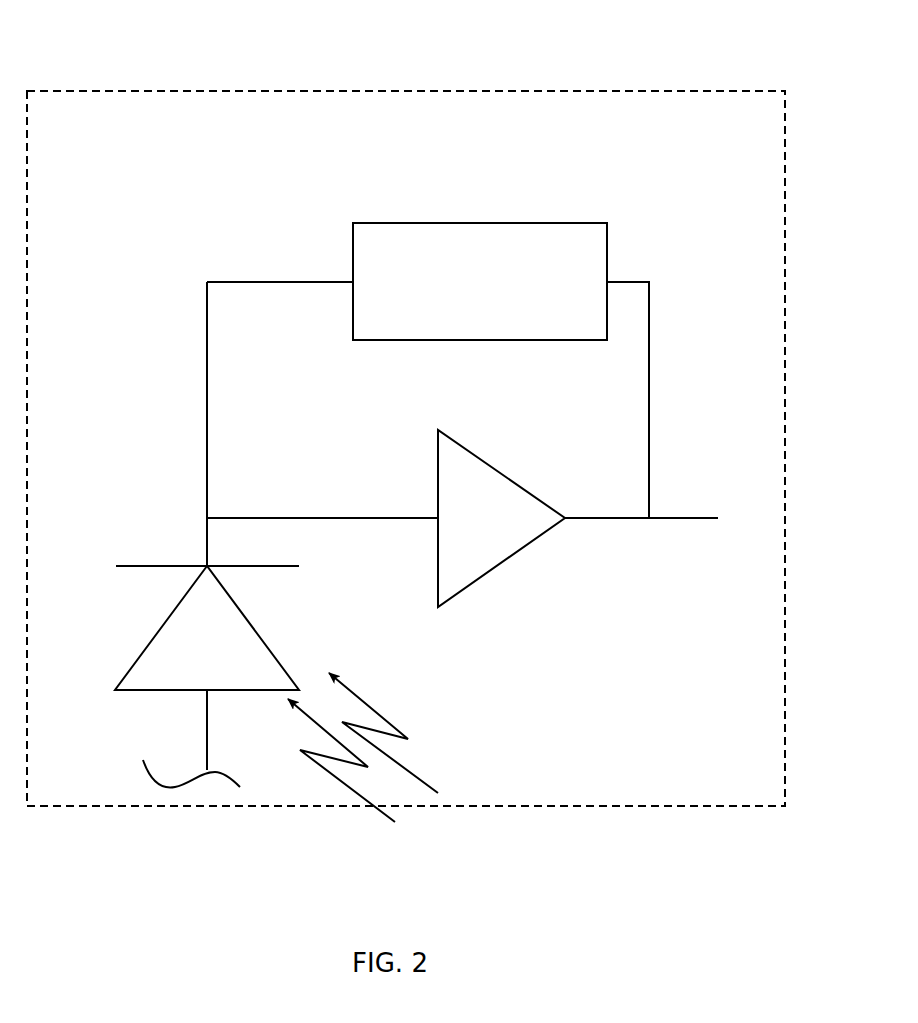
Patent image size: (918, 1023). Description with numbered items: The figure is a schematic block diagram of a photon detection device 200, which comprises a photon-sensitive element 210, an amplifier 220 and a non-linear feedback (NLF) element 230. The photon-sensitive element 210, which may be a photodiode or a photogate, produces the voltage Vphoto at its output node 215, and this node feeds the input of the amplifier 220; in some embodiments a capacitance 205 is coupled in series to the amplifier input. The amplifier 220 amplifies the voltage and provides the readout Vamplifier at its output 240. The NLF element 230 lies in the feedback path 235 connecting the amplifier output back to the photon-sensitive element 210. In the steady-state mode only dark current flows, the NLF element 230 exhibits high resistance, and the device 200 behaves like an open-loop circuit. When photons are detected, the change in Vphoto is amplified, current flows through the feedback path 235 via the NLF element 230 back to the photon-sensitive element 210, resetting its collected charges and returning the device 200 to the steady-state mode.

The photon detection device 200 is at (185, 90).
The capacitance 205 is at (200, 749).
The photon-sensitive element 210 is at (264, 633).
The photodiode output node (Vphoto) 215 is at (203, 538).
The amplifier 220 is at (479, 584).
The NLF element 230 is at (351, 233).
The feedback path 235 is at (204, 320).
The amplifier output (Vamplifier) 240 is at (660, 521).